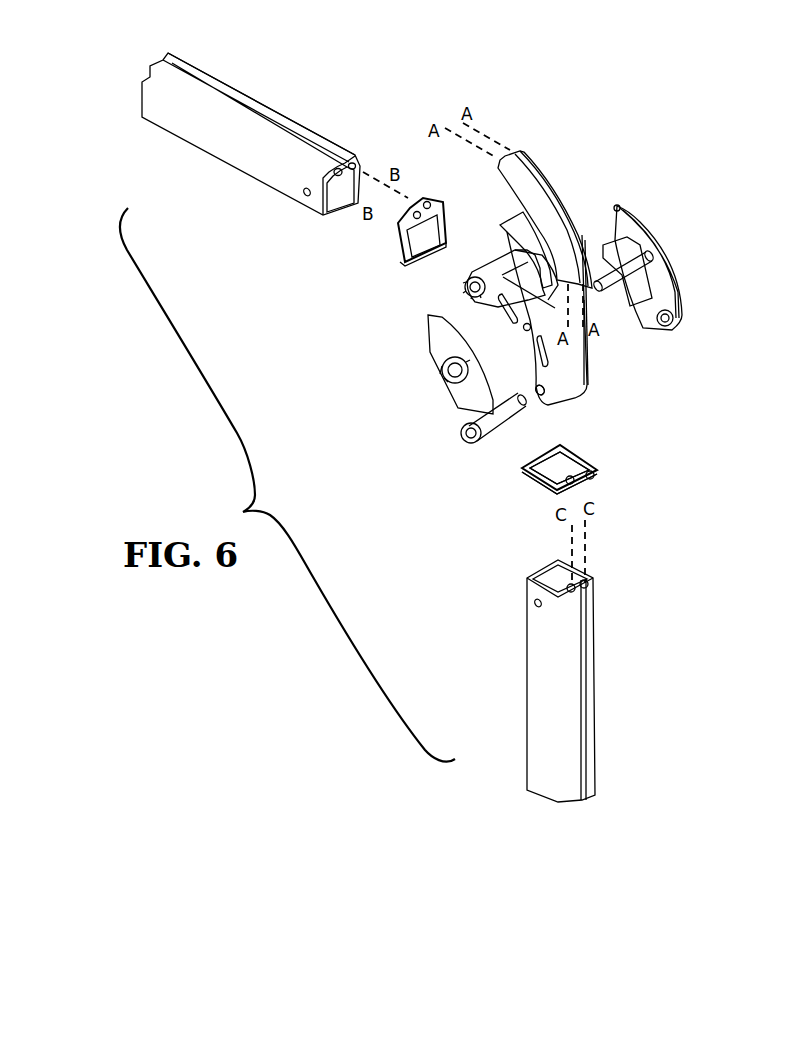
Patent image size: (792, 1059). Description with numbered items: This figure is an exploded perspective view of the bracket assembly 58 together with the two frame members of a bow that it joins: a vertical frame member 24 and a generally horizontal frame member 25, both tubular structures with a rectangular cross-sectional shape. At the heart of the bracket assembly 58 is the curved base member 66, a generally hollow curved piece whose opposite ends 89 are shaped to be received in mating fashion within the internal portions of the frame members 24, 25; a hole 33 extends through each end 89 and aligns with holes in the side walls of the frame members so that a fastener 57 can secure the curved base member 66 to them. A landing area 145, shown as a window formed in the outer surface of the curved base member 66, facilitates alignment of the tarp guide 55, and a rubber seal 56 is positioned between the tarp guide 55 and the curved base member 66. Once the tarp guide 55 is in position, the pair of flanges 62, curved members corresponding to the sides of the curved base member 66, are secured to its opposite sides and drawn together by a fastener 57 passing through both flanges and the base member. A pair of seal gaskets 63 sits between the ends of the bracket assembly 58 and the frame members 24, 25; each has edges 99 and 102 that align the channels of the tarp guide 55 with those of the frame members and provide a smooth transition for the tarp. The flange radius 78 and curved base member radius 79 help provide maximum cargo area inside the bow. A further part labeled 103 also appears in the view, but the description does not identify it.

The vertical frame member 24 is at (540, 650).
The horizontal frame member 25 is at (288, 150).
The hole 33 is at (545, 392).
The tarp guide 55 is at (553, 223).
The seal 56 is at (520, 227).
The fastener 57 is at (485, 432).
The bracket assembly 58 is at (637, 104).
The flange 62 is at (440, 342).
The seal gasket 63 is at (398, 257).
The curved base member 66 is at (505, 263).
The flange radius 78 is at (450, 392).
The curved base member radius 79 is at (515, 325).
The end 89 is at (472, 262).
The edge 99 is at (438, 196).
The edge 102 is at (559, 468).
The bracket 103 is at (402, 232).
The landing area 145 is at (587, 360).